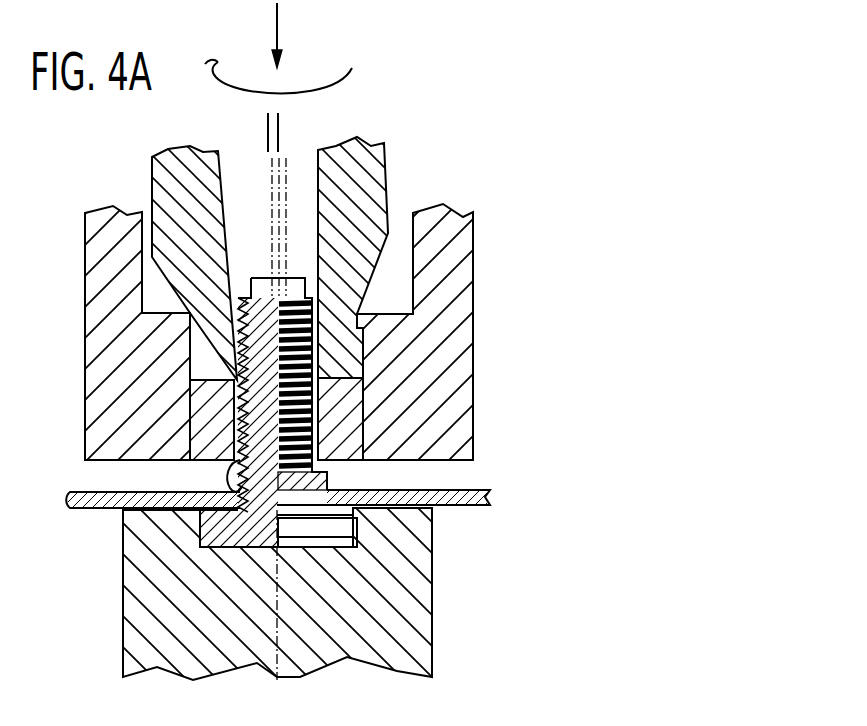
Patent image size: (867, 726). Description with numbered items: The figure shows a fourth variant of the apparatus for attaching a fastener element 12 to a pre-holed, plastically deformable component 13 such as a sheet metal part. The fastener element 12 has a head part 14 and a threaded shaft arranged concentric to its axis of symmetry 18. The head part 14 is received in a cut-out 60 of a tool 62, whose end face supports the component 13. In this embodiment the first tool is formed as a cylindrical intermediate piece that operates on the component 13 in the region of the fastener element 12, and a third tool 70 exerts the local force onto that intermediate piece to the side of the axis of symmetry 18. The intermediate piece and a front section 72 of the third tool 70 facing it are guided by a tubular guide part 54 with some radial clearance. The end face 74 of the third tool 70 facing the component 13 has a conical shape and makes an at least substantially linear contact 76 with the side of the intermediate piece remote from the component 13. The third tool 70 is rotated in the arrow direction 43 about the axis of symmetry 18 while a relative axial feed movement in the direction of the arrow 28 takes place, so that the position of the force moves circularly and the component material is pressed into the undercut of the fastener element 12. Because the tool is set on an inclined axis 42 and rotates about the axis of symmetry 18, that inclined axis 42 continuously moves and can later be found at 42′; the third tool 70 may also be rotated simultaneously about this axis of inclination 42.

The fastener element 12 is at (312, 544).
The pre-holed plastically deformable component 13 is at (477, 496).
The head part 14 is at (342, 528).
The axis of symmetry 18 is at (268, 125).
The arrow 28 is at (277, 15).
The inclined axis 42 is at (238, 148).
The inclined axis at a later point in time 42′ is at (290, 130).
The arrow direction 43 is at (320, 60).
The tubular guide part 54 is at (452, 247).
The cut-out 60 is at (230, 553).
The tool 62 is at (410, 647).
The third tool 70 is at (368, 175).
The front section 72 is at (212, 343).
The end face 74 is at (343, 353).
The linear contact 76 is at (200, 406).